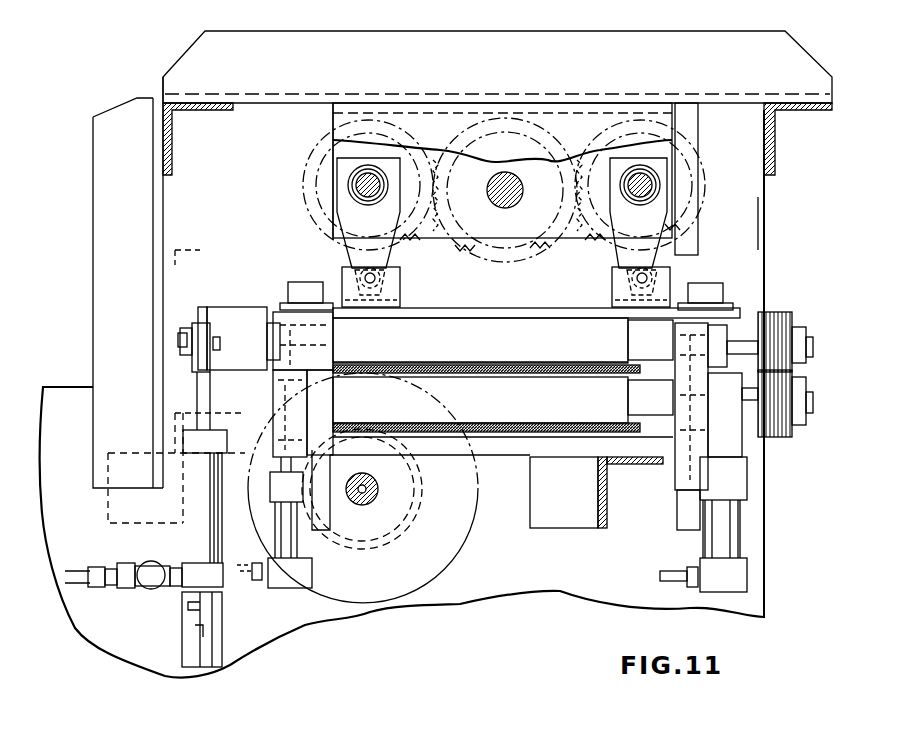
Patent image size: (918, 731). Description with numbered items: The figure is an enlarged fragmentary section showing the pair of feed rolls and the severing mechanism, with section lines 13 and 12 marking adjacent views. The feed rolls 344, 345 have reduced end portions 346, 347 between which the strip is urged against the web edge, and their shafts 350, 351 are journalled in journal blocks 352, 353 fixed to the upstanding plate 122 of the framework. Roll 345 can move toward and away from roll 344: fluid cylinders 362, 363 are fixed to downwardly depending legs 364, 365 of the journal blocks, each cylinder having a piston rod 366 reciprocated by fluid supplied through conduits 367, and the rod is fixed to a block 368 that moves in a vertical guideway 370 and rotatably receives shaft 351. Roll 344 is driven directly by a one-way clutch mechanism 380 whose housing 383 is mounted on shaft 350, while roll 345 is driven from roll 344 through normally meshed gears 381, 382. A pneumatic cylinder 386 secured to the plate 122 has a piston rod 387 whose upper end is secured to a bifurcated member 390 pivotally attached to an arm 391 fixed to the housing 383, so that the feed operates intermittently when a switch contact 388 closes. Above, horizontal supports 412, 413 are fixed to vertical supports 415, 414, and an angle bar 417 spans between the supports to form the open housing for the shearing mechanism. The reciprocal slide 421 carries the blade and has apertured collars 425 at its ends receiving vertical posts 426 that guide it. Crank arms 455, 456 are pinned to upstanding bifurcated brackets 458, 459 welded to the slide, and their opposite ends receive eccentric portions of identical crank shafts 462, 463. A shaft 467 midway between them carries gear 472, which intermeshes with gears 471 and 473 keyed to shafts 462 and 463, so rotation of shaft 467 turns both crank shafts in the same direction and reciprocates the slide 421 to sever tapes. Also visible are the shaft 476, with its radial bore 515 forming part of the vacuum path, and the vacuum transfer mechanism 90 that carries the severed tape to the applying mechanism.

The section line 13— 13 is at (371, 55).
The section line 12— 12 is at (496, 300).
The angle bar 417 is at (554, 76).
The gear 472 is at (518, 172).
The horizontal support 412 is at (792, 112).
The horizontal support 413 is at (183, 112).
The vertical support 414 is at (163, 218).
The vertical support 415 is at (760, 211).
The vertical post 426 is at (308, 248).
The gear 473 is at (672, 185).
The gear 471 is at (491, 203).
The crank shaft 462 is at (352, 182).
The crank shaft 463 is at (652, 182).
The shaft 467 is at (513, 206).
The crank arm 455 is at (356, 249).
The crank arm 456 is at (652, 243).
The bifurcated bracket 458 is at (400, 280).
The bifurcated bracket 459 is at (612, 274).
The reciprocal slide 421 is at (553, 312).
The roll 344 is at (512, 358).
The vertical guideway 370 is at (333, 366).
The roll 345 is at (512, 408).
The reduced end portion 346 is at (640, 356).
The reduced end portion 347 is at (640, 410).
The journal block 353 is at (700, 330).
The journal block 352 is at (313, 330).
The apertured collar 425 is at (296, 282).
The housing 383 is at (258, 302).
The clutch mechanism 380 is at (183, 298).
The arm 391 is at (203, 330).
The bifurcated member 390 is at (190, 360).
The piston rod 387 is at (200, 413).
The pneumatic cylinder 386 is at (192, 530).
The contact 388 is at (82, 588).
The upstanding plate 122 is at (144, 646).
The fluid cylinder 362 is at (300, 571).
The block 368 is at (298, 405).
The piston rod 366 is at (312, 430).
The downwardly depending leg 365 is at (680, 500).
The fluid cylinder 363 is at (735, 575).
The conduit 367 is at (667, 576).
The shaft 350 is at (745, 340).
The shaft 351 is at (810, 406).
The gear 381 is at (803, 334).
The gear 382 is at (805, 396).
The vacuum transfer mechanism 90 is at (475, 522).
The downwardly depending leg 364 is at (318, 505).
The shaft 476 is at (380, 494).
The radial bore 515 is at (380, 488).